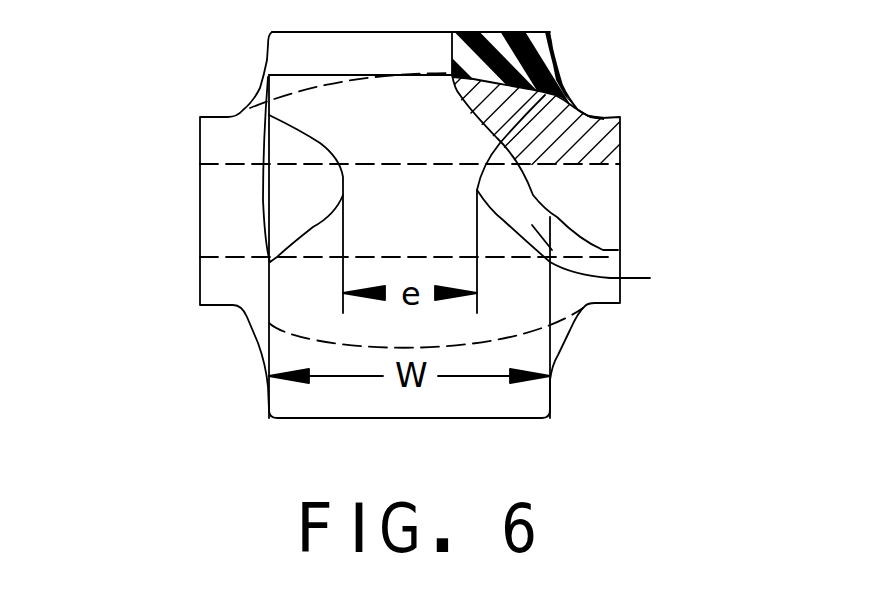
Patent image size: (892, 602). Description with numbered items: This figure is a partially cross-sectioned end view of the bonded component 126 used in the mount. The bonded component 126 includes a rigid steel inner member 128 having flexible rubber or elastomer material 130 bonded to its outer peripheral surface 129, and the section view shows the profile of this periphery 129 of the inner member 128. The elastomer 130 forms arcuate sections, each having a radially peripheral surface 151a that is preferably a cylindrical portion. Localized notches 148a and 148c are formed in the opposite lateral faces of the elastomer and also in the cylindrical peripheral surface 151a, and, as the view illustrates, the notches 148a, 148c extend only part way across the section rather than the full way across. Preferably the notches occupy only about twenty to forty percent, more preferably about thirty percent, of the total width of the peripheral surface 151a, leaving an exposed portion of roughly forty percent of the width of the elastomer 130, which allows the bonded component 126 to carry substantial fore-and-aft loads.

The bonded component 126 is at (242, 392).
The inner member 128 is at (608, 141).
The outer peripheral surface 129 is at (545, 95).
The elastomer material 130 is at (523, 397).
The notch 148a is at (285, 202).
The notch 148c is at (650, 278).
The radially peripheral surface 151a is at (394, 121).